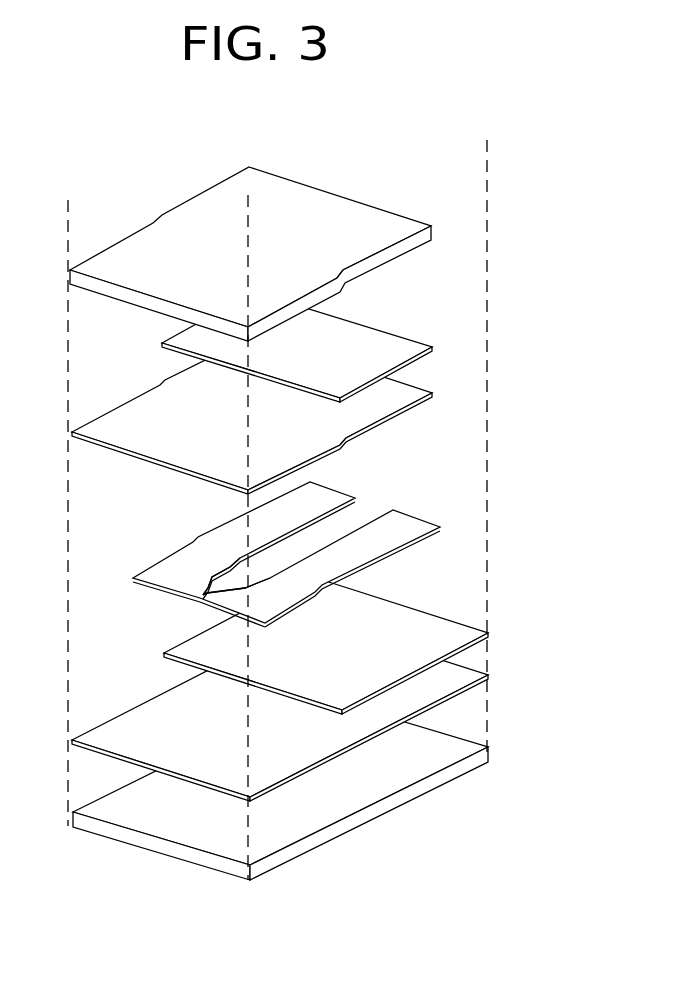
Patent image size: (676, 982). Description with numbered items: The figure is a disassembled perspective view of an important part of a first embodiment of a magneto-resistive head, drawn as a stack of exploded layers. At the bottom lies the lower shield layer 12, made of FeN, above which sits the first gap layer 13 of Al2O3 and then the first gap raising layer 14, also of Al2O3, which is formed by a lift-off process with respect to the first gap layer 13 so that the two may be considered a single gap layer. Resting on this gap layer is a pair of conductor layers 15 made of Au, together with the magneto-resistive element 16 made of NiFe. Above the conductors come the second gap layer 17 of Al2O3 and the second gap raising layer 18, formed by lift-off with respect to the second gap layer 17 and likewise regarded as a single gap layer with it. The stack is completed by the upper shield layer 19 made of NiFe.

The lower shield layer 12 is at (435, 743).
The first gap layer 13 is at (450, 673).
The first gap raising layer 14 is at (410, 613).
The conductor layers 15 is at (417, 522).
The magneto-resistive element 16 is at (198, 597).
The second gap layer 17 is at (402, 396).
The second gap raising layer 18 is at (403, 347).
The upper shield layer 19 is at (402, 228).